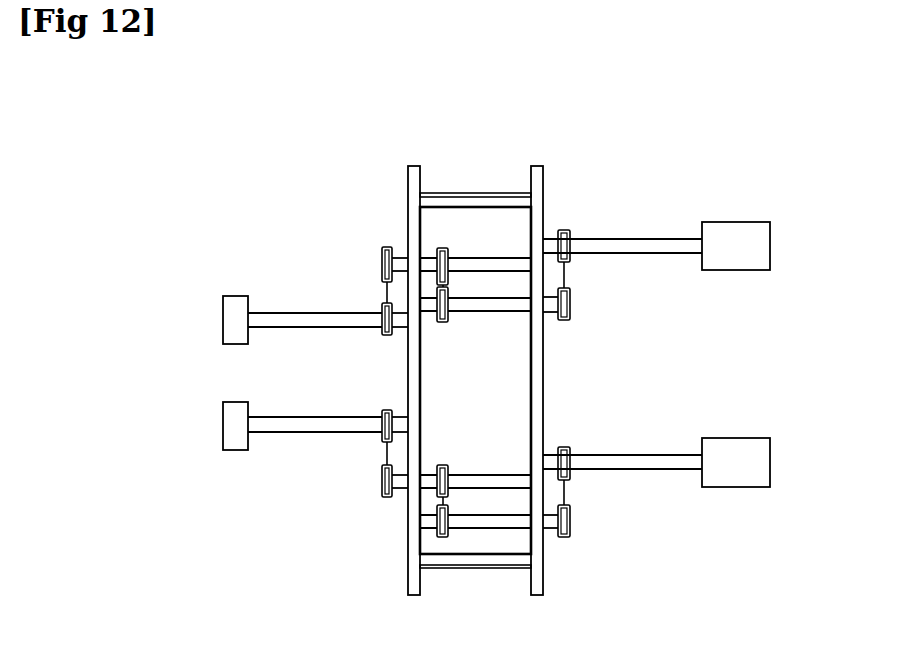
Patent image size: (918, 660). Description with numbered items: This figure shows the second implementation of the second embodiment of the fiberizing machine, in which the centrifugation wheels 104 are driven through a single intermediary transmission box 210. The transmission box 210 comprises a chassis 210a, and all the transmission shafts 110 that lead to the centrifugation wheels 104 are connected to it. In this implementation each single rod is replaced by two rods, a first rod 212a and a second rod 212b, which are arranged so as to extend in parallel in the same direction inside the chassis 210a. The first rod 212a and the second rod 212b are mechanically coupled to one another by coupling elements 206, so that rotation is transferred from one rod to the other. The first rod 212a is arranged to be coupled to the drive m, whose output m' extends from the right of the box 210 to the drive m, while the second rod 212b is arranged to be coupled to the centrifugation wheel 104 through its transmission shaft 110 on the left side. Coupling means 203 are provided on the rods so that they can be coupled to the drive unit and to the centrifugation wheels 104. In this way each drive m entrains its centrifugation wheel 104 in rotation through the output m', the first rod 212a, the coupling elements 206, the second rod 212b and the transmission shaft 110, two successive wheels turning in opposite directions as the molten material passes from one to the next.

The centrifugation wheel 104 is at (236, 297).
The transmission shaft 110 is at (313, 318).
The coupling means 203 is at (573, 278).
The coupling elements 206 is at (451, 286).
The intermediary transmission box 210 is at (522, 143).
The chassis 210a is at (538, 182).
The first rod 212a is at (503, 306).
The second rod 212b is at (433, 261).
The drive m is at (736, 354).
The output m' is at (622, 218).